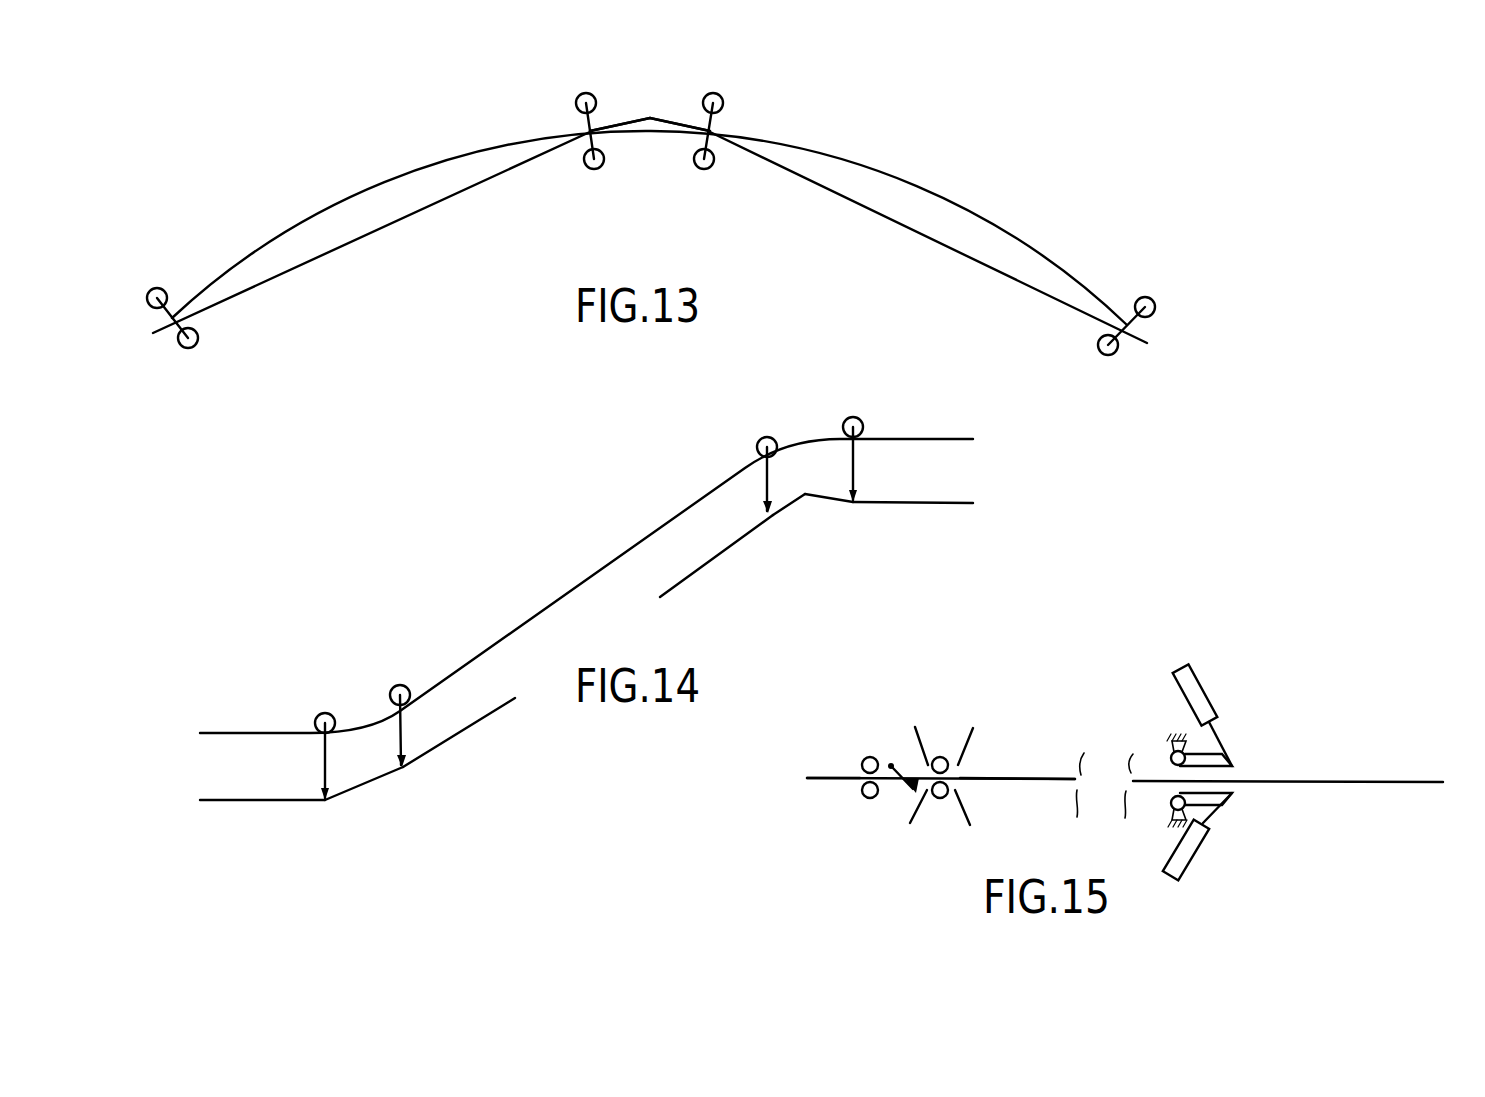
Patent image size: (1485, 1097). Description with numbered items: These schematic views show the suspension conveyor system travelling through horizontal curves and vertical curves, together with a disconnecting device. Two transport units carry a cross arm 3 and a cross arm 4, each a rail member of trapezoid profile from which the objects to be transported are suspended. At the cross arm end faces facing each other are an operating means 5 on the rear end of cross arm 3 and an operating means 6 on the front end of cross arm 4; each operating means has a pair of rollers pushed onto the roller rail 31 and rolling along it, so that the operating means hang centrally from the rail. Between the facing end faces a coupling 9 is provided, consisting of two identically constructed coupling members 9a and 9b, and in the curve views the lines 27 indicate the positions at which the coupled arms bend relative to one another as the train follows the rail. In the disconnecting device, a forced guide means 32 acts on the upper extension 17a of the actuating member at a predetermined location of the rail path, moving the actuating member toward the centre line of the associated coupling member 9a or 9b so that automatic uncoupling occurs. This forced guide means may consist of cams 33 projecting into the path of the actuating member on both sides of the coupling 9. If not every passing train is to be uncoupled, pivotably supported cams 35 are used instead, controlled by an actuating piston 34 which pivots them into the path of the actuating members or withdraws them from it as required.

In FIG. 13, the cross arm 3 is at (473, 188).
In FIG. 14, the cross arm 3 is at (238, 803).
In FIG. 15, the cross arm 3 is at (820, 777).
In FIG. 13, the cross arm 4 is at (900, 221).
In FIG. 14, the cross arm 4 is at (483, 720).
In FIG. 15, the cross arm 4 is at (993, 780).
In FIG. 13, the operating means 5 is at (578, 118).
In FIG. 14, the operating means 5 is at (323, 768).
In FIG. 15, the operating means 5 is at (860, 781).
In FIG. 13, the operating means 6 is at (717, 120).
In FIG. 14, the operating means 6 is at (403, 763).
In FIG. 15, the operating means 6 is at (947, 775).
In FIG. 13, the coupling 9 is at (648, 142).
In FIG. 13, the coupling member 9a is at (668, 122).
In FIG. 14, the coupling member 9a is at (390, 779).
In FIG. 13, the coupling member 9b is at (625, 126).
In FIG. 14, the coupling member 9b is at (347, 800).
In FIG. 15, the upper extension of the actuating member 17a is at (900, 761).
In FIG. 14, the cut line marks 27 is at (315, 803).
In FIG. 13, the roller rail 31 is at (357, 192).
In FIG. 14, the roller rail 31 is at (568, 590).
In FIG. 15, the roller rail 31 is at (1043, 777).
In FIG. 15, the forced guide means 32 is at (918, 845).
In FIG. 15, the cams 33 is at (956, 748).
In FIG. 15, the actuating piston 34 is at (1203, 703).
In FIG. 15, the pivotably supported cams 35 is at (1227, 755).